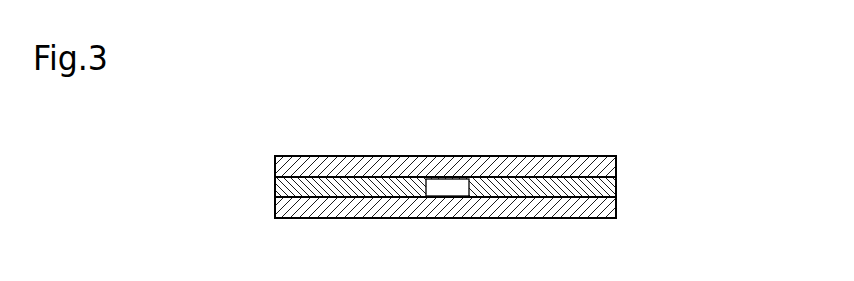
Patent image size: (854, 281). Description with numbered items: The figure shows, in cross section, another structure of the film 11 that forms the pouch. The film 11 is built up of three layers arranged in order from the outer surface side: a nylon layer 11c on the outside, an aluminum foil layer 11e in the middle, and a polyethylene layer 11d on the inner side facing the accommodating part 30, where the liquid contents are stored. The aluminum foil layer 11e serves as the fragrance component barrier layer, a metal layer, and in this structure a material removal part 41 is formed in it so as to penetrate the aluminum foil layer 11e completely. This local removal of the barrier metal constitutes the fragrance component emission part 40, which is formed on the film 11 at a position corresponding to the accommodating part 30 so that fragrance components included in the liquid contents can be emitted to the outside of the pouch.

The film 11 is at (482, 152).
The nylon layer 11c is at (616, 167).
The aluminum foil layer 11e is at (616, 187).
The polyethylene layer 11d is at (616, 208).
The fragrance component emission part 40 is at (451, 143).
The material removal part 41 is at (448, 188).
The accommodating part 30 is at (455, 258).